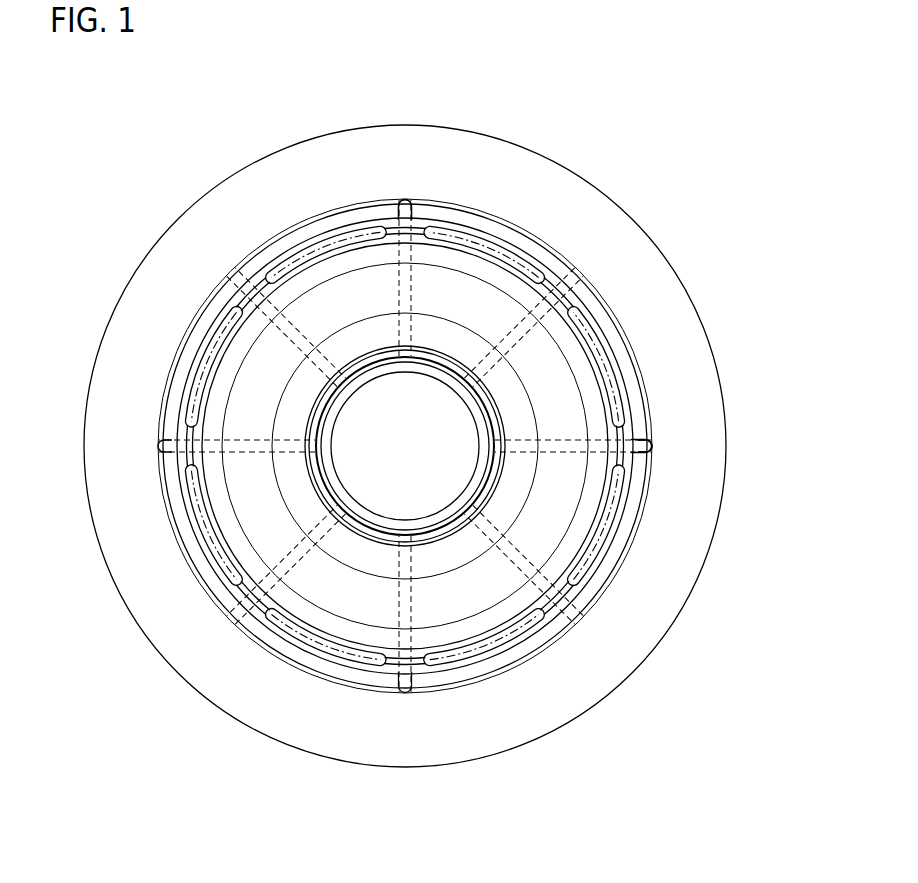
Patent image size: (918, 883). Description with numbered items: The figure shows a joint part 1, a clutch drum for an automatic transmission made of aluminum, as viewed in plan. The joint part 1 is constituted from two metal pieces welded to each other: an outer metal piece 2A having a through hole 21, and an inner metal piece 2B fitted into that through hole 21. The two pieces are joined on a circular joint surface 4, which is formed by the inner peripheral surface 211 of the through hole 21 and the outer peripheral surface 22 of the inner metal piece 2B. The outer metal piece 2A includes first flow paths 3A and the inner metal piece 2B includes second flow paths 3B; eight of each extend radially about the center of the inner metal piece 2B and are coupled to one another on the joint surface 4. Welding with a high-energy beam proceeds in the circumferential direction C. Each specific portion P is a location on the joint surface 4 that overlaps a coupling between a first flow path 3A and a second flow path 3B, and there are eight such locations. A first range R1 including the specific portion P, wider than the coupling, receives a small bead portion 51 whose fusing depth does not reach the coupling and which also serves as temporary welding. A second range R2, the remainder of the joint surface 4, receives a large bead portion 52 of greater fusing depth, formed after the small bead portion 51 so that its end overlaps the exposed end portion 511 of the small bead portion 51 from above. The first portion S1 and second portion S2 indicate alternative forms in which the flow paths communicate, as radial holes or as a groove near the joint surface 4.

The joint part 1 is at (600, 142).
The outer metal piece 2A is at (222, 253).
The inner metal piece 2B is at (332, 300).
The through hole 21 is at (509, 387).
The inner peripheral surface 211 is at (381, 139).
The outer peripheral surface 22 is at (200, 372).
The first flow path 3A is at (458, 514).
The second flow path 3B is at (461, 506).
The joint surface 4 is at (405, 492).
The small bead portion 51 is at (256, 607).
The exposed end portion 511 is at (346, 496).
The large bead portion 52 is at (405, 490).
The specific portion P is at (572, 610).
The first portion S1 is at (383, 639).
The second portion S2 is at (552, 577).
The first range R1 is at (563, 251).
The second range R2 is at (563, 251).
The circumferential direction C is at (720, 703).